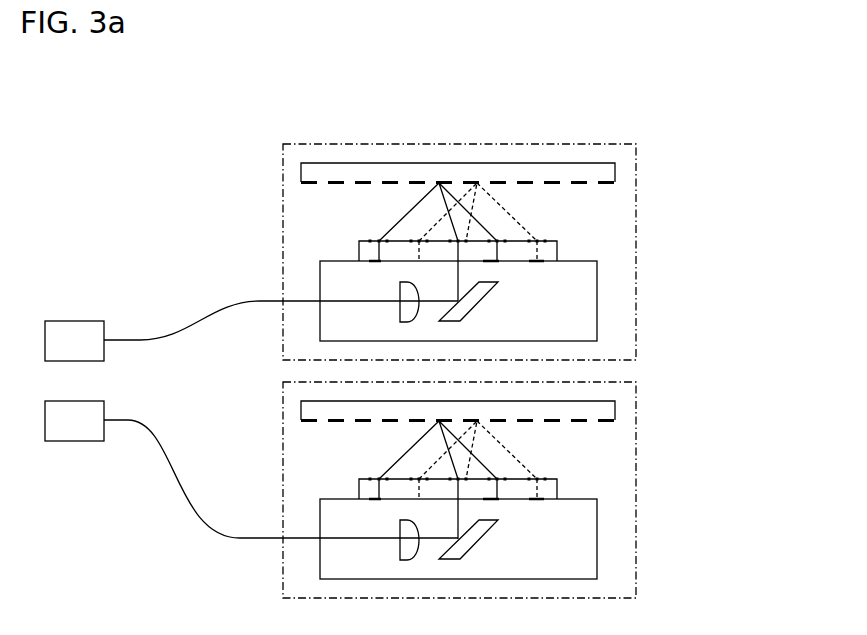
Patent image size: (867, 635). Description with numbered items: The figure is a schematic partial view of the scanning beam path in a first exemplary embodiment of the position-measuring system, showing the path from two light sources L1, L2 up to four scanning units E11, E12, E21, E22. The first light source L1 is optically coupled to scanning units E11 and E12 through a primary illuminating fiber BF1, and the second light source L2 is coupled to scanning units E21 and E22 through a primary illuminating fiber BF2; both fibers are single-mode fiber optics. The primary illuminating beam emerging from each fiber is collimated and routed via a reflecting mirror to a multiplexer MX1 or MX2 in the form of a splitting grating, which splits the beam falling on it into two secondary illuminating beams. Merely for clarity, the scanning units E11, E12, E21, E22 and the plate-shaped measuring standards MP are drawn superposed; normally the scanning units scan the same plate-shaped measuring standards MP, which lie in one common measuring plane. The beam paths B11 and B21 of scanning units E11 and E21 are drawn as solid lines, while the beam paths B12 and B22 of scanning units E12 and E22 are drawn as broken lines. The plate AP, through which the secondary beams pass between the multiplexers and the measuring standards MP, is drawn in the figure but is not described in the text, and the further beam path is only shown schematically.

The plate-shaped measuring standard MP is at (375, 177).
The beam path B11 is at (386, 221).
The beam path B12 is at (533, 221).
The beam path B21 is at (386, 459).
The beam path B22 is at (533, 455).
The aperture plate AP is at (549, 250).
The multiplexer MX1 is at (449, 250).
The multiplexer MX2 is at (449, 488).
The scanning unit E11 is at (507, 301).
The scanning unit E12 is at (526, 301).
The scanning unit E21 is at (507, 529).
The scanning unit E22 is at (526, 529).
The light source L1 is at (74, 325).
The light source L2 is at (74, 404).
The primary illuminating fiber BF1 is at (281, 315).
The primary illuminating fiber BF2 is at (281, 465).